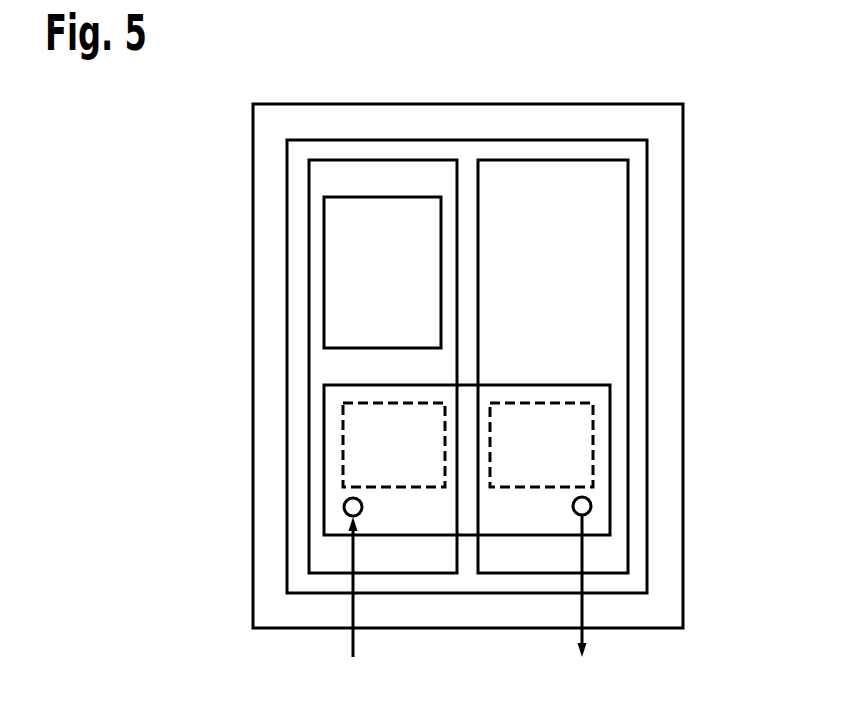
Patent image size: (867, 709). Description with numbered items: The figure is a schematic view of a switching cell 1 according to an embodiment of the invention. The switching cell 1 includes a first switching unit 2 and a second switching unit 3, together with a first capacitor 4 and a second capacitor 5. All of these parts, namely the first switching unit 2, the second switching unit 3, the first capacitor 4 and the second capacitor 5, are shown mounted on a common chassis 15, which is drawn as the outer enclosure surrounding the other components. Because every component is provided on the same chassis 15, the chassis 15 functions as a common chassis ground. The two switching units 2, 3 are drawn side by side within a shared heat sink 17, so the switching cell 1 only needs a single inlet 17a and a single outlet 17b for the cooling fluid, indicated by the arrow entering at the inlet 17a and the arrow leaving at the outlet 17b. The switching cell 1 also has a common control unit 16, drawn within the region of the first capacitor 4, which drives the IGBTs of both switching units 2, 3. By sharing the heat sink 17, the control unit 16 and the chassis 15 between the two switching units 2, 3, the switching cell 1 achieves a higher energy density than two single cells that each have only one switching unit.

The switching cell 1 is at (178, 101).
The common chassis 15 is at (462, 614).
The first capacitor 4 is at (411, 142).
The second capacitor 5 is at (516, 144).
The common control unit 16 is at (365, 219).
The heat sink 17 is at (552, 397).
The first switching unit 2 is at (343, 447).
The second switching unit 3 is at (593, 445).
The inlet 17a is at (353, 555).
The outlet 17b is at (582, 553).